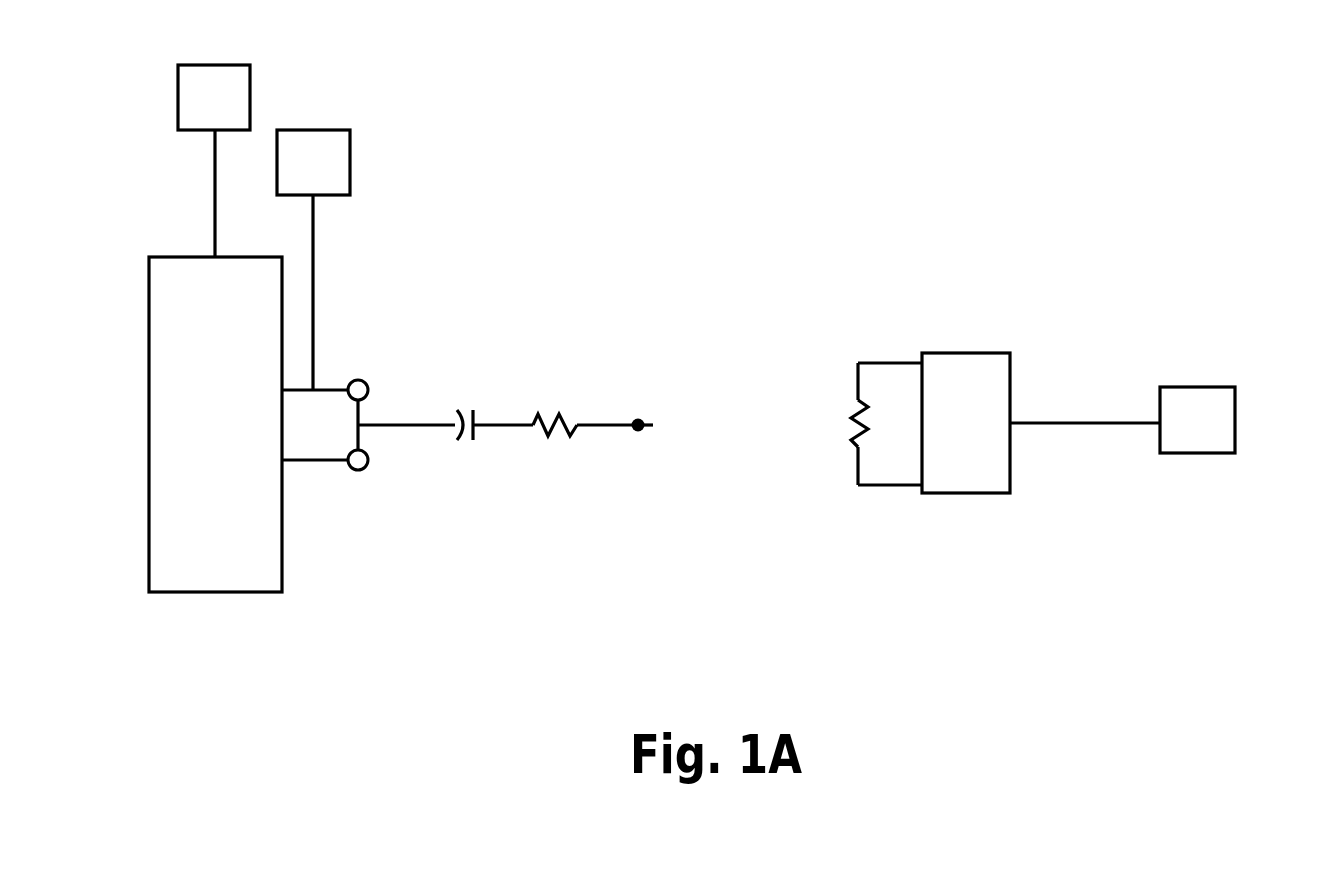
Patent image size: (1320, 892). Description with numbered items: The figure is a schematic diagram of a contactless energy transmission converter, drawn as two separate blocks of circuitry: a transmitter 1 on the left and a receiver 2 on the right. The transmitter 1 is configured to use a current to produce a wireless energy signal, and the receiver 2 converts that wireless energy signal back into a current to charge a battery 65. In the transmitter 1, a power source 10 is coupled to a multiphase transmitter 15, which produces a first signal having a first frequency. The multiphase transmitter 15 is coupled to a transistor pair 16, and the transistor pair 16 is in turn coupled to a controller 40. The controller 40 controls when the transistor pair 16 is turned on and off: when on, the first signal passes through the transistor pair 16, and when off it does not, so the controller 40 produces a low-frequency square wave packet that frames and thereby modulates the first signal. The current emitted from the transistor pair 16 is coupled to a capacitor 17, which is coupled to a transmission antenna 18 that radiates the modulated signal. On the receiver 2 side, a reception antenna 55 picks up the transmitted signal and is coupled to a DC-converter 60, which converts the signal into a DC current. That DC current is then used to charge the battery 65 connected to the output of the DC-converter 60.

The transmitter 1 is at (641, 97).
The receiver 2 is at (1206, 224).
The power source 10 is at (214, 161).
The multiphase transmitter 15 is at (215, 424).
The transistor pair 16 is at (381, 366).
The capacitor 17 is at (489, 409).
The transmission antenna 18 is at (643, 409).
The controller 40 is at (313, 260).
The reception antenna 55 is at (842, 382).
The DC-converter 60 is at (966, 423).
The battery 65 is at (1122, 420).